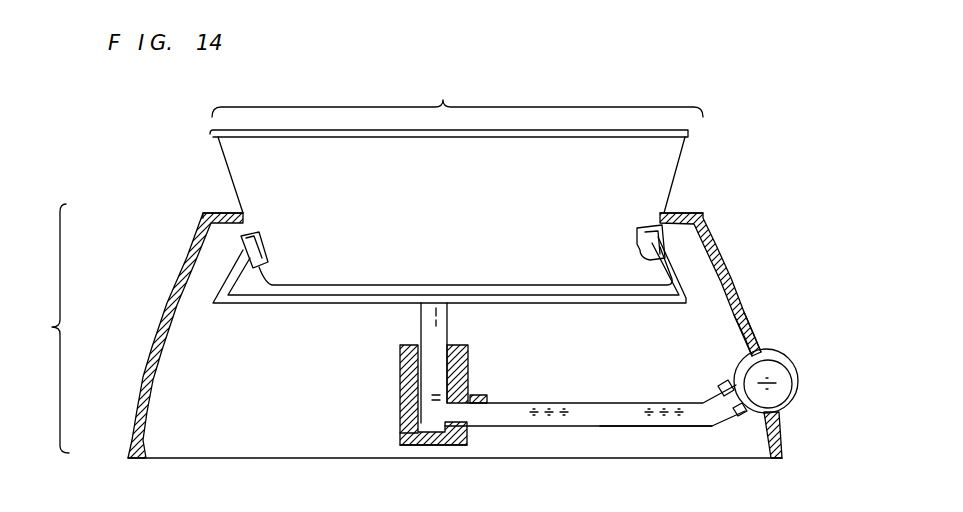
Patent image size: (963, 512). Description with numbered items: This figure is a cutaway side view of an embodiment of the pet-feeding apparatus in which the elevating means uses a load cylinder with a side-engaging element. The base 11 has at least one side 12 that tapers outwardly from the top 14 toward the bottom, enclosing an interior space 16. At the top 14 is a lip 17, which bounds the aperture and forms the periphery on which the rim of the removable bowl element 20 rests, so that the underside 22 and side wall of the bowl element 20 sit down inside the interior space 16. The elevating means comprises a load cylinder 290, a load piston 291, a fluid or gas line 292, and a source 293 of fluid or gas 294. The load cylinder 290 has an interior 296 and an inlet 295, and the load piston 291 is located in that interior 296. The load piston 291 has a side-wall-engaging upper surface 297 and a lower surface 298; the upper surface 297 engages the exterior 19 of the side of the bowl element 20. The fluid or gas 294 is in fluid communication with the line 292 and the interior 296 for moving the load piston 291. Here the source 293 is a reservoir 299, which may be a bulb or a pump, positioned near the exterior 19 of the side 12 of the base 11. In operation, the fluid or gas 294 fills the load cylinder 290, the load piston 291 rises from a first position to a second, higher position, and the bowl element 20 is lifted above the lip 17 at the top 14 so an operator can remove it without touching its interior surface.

The base 11 is at (40, 328).
The side 12 is at (785, 438).
The top 14 is at (203, 217).
The interior space 16 is at (236, 413).
The lip 17 is at (229, 213).
The exterior 19 is at (763, 338).
The bowl element 20 is at (456, 145).
The underside 22 is at (445, 290).
The load cylinder 290 is at (464, 370).
The load piston 291 is at (440, 332).
The fluid or gas line 292 is at (585, 403).
The source of fluid or gas 293 is at (793, 358).
The fluid or gas 294 is at (566, 418).
The inlet 295 is at (484, 398).
The interior 296 is at (420, 428).
The side-wall-engaging upper surface 297 is at (268, 240).
The lower surface 298 is at (430, 378).
The reservoir 299 is at (797, 378).